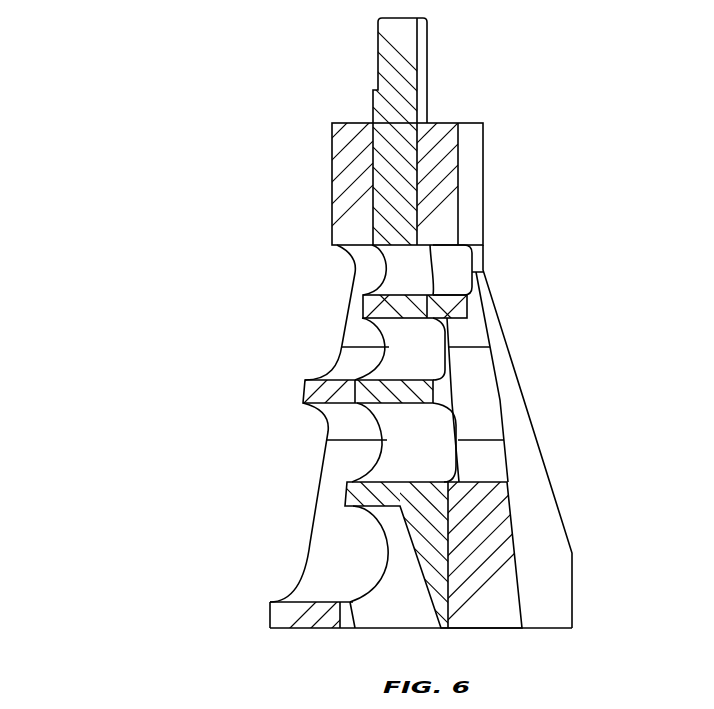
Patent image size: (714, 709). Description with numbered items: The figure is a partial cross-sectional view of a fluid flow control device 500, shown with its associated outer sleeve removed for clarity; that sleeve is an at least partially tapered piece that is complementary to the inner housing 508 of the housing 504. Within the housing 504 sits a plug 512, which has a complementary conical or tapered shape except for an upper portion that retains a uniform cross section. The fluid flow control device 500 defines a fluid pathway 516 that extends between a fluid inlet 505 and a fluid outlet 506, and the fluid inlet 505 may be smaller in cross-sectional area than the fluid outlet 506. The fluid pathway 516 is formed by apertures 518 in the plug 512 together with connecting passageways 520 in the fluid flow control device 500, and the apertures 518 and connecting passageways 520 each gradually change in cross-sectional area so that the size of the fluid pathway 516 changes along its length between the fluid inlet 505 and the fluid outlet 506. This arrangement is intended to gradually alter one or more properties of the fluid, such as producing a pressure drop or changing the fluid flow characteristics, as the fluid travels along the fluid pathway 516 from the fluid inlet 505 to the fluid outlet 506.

The fluid flow control device 500 is at (80, 135).
The housing 504 is at (467, 202).
The fluid inlet 505 is at (478, 271).
The fluid outlet 506 is at (417, 628).
The inner housing 508 is at (347, 220).
The plug 512 is at (387, 107).
The fluid pathway 516 is at (312, 545).
The apertures 518 is at (410, 273).
The connecting passageways 520 is at (355, 308).